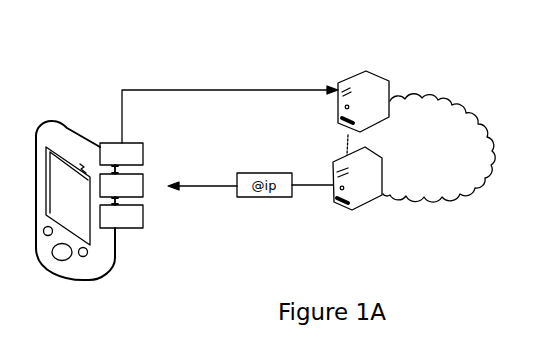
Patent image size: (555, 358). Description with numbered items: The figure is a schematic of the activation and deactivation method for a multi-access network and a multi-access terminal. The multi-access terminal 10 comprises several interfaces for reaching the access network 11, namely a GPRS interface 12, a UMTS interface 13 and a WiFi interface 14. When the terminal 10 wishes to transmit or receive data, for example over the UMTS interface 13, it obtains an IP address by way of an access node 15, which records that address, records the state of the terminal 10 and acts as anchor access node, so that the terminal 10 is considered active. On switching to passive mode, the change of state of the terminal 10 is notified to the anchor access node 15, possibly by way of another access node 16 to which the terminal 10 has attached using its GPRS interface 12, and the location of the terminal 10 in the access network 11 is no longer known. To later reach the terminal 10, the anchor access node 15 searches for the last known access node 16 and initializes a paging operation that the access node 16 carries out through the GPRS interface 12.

The multi-access terminal 10 is at (70, 127).
The access network 11 is at (420, 100).
The GPRS interface 12 is at (150, 150).
The UMTS interface 13 is at (145, 183).
The WiFi interface 14 is at (145, 217).
The access node 15 is at (365, 207).
The access node 16 is at (367, 71).